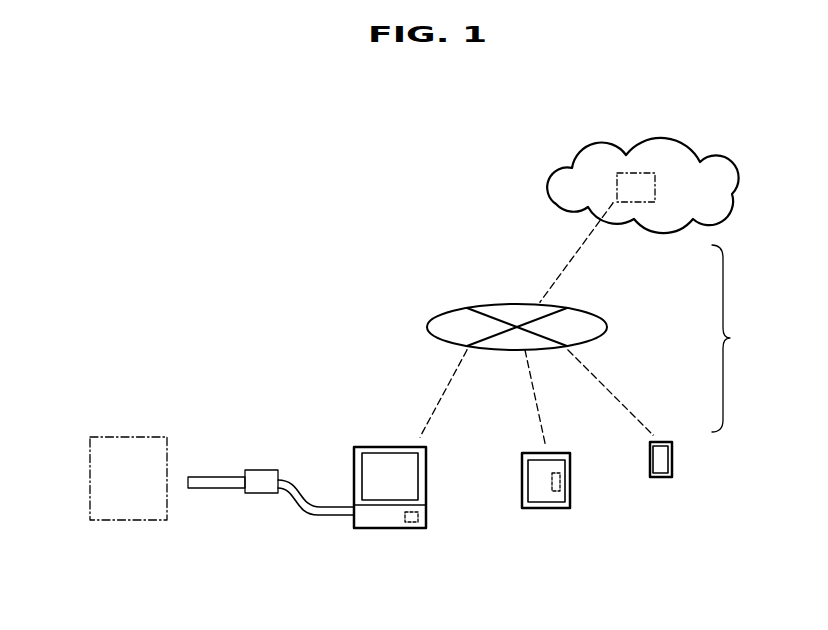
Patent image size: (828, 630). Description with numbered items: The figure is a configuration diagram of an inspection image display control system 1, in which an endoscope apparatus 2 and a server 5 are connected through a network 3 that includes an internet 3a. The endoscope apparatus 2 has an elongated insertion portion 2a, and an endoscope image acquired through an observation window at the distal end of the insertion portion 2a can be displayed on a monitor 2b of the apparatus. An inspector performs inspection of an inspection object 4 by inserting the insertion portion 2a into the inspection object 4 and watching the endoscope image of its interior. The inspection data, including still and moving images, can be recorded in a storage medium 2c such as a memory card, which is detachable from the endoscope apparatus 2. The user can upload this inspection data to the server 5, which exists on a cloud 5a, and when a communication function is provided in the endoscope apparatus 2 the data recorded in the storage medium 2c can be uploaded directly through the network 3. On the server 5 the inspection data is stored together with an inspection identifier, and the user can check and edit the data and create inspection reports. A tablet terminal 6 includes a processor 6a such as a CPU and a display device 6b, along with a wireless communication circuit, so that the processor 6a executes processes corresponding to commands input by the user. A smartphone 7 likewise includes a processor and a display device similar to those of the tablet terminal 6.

The inspection image display control system 1 is at (259, 242).
The endoscope apparatus 2 is at (360, 494).
The insertion portion 2a is at (218, 490).
The monitor 2b is at (373, 463).
The storage medium 2c is at (410, 523).
The network 3 is at (730, 338).
The internet 3a is at (428, 322).
The inspection object 4 is at (131, 437).
The server 5 is at (646, 167).
The cloud 5a is at (574, 146).
The tablet terminal 6 is at (539, 509).
The processor 6a is at (563, 483).
The display device 6b is at (532, 475).
The smartphone 7 is at (660, 477).